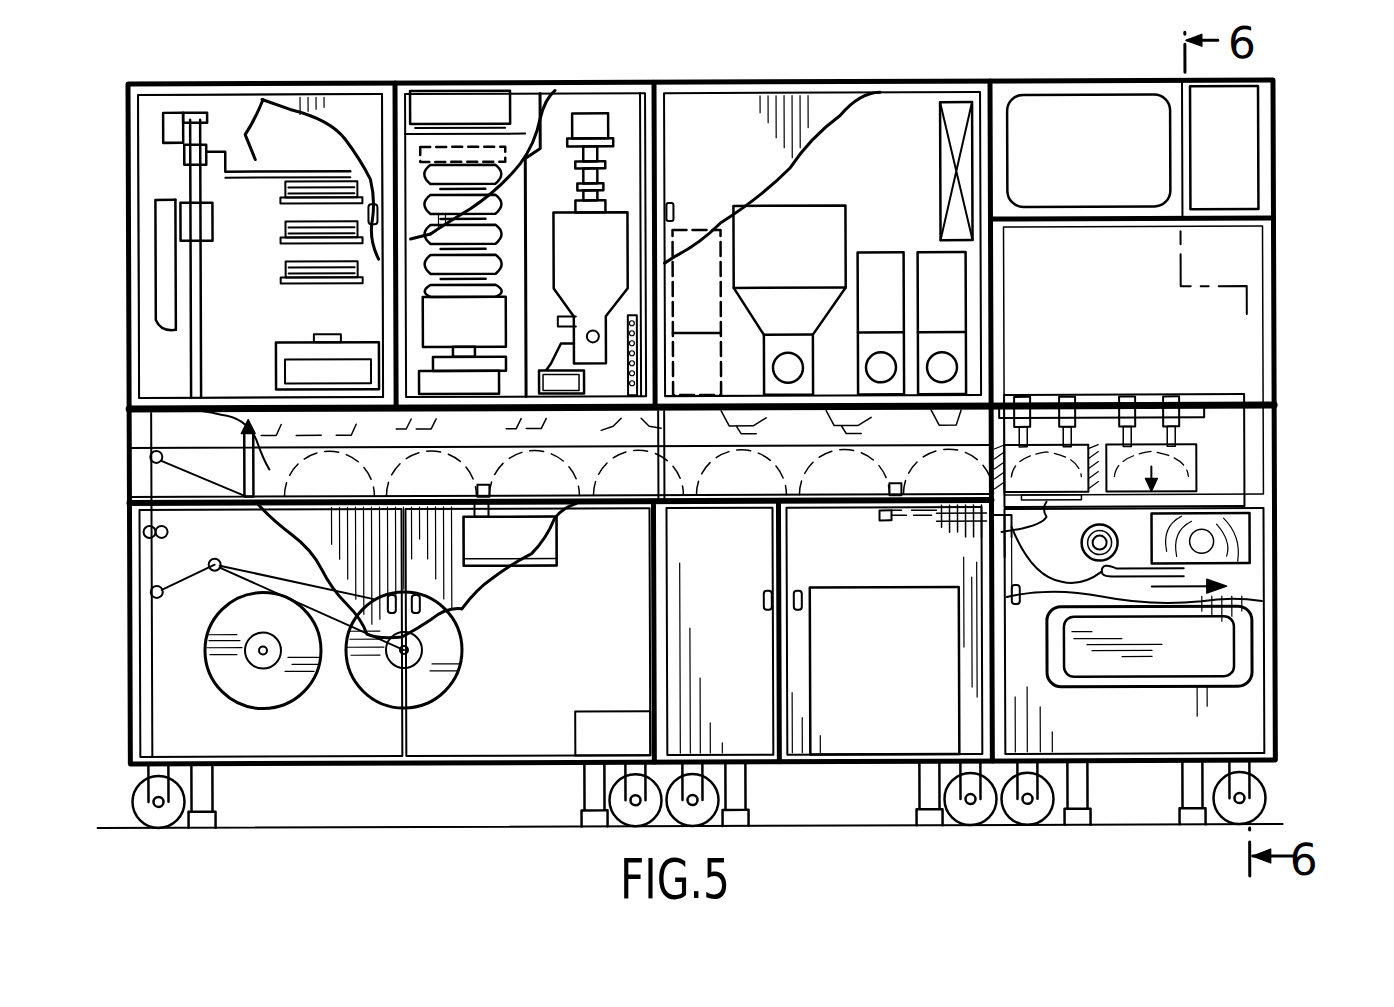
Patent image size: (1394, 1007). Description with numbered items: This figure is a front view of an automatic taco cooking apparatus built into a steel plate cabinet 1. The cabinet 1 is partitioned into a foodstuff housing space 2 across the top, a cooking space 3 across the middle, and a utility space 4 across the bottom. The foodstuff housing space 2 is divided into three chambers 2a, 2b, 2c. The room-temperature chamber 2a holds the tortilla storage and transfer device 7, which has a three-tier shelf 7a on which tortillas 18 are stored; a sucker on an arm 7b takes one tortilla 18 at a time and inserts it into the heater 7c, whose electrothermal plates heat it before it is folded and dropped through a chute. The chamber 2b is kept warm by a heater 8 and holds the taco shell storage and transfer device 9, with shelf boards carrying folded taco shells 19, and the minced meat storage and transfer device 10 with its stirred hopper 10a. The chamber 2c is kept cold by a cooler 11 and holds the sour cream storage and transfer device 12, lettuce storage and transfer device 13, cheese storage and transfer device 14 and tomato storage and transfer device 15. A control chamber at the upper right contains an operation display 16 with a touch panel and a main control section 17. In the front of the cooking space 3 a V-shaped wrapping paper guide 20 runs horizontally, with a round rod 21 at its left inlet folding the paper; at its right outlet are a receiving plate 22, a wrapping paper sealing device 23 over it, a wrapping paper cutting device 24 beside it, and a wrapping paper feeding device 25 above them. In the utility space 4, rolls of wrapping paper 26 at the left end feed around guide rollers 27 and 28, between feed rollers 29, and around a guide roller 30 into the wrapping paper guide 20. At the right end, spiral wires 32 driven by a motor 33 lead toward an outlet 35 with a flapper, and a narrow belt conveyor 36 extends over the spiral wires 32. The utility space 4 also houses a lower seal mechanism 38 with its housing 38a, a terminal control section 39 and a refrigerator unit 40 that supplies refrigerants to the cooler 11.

The cabinet 1 is at (1285, 102).
The foodstuff housing space 2 is at (135, 232).
The chamber 2a is at (322, 96).
The chamber 2b is at (553, 95).
The chamber 2c is at (695, 96).
The cooking space 3 is at (135, 428).
The utility space 4 is at (142, 712).
The tortilla storage and transfer device 7 is at (208, 125).
The three-tier shelf 7a is at (283, 280).
The arm 7b is at (278, 170).
The heater 7c is at (275, 345).
The heater 8 is at (625, 358).
The taco shell storage and transfer device 9 is at (455, 152).
The minced meat storage and transfer device 10 is at (592, 112).
The hopper 10a is at (563, 212).
The cooler 11 is at (956, 105).
The sour cream storage and transfer device 12 is at (690, 232).
The lettuce storage and transfer device 13 is at (800, 208).
The cheese storage and transfer device 14 is at (870, 255).
The tomato storage and transfer device 15 is at (935, 255).
The operation display 16 is at (1062, 98).
The main control section 17 is at (1240, 218).
The tortilla 18 is at (366, 200).
The taco shell 19 is at (490, 268).
The wrapping paper guide 20 is at (232, 412).
The round rod 21 is at (245, 462).
The receiving plate 22 is at (1010, 520).
The wrapping paper sealing device 23 is at (1038, 420).
The wrapping paper cutting device 24 is at (1104, 420).
The wrapping paper feeding device 25 is at (1150, 412).
The wrapping paper 26 is at (270, 580).
The guide roller 27 is at (212, 575).
The guide roller 28 is at (148, 590).
The feed rollers 29 is at (142, 532).
The guide roller 30 is at (148, 456).
The spiral wire 32 is at (1082, 548).
The motor 33 is at (1020, 540).
The outlet 35 is at (1045, 682).
The belt conveyor 36 is at (1100, 592).
The lower seal mechanism 38 is at (505, 570).
The drive housing 38a is at (470, 503).
The terminal control section 39 is at (570, 713).
The refrigerator unit 40 is at (845, 762).